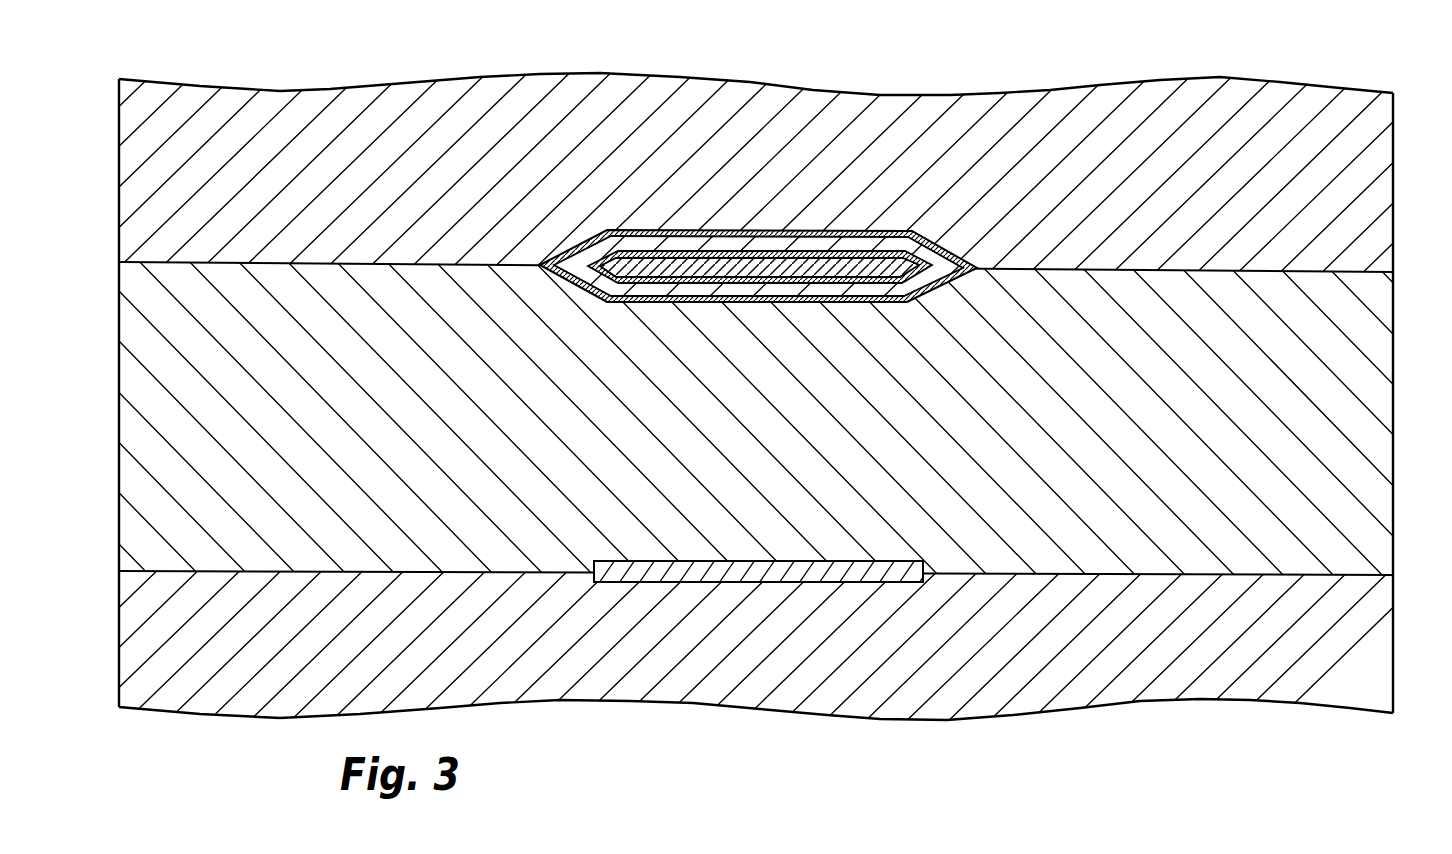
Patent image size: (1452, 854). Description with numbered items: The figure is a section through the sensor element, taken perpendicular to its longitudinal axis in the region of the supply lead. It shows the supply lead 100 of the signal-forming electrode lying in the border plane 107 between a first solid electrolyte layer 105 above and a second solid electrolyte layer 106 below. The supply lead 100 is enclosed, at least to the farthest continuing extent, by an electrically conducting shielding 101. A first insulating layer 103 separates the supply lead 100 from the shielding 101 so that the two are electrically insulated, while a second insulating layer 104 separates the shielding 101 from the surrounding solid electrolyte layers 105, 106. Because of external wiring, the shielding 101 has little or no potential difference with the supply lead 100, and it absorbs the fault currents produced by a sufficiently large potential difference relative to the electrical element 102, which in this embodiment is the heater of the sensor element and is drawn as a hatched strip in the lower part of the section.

The supply lead of the signal-forming electrode 100 is at (651, 262).
The electrically conducting shielding 101 is at (779, 248).
The electrical element 102 is at (838, 572).
The first insulating layer 103 is at (700, 258).
The second insulating layer 104 is at (857, 236).
The first solid electrolyte layer 105 is at (1382, 147).
The second solid electrolyte layer 106 is at (1382, 410).
The border plane 107 is at (1305, 271).